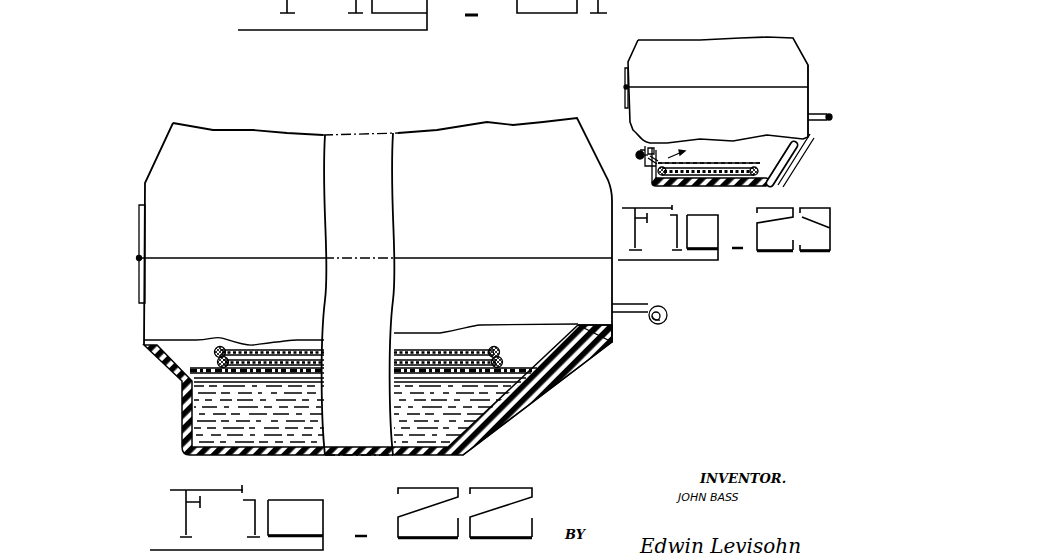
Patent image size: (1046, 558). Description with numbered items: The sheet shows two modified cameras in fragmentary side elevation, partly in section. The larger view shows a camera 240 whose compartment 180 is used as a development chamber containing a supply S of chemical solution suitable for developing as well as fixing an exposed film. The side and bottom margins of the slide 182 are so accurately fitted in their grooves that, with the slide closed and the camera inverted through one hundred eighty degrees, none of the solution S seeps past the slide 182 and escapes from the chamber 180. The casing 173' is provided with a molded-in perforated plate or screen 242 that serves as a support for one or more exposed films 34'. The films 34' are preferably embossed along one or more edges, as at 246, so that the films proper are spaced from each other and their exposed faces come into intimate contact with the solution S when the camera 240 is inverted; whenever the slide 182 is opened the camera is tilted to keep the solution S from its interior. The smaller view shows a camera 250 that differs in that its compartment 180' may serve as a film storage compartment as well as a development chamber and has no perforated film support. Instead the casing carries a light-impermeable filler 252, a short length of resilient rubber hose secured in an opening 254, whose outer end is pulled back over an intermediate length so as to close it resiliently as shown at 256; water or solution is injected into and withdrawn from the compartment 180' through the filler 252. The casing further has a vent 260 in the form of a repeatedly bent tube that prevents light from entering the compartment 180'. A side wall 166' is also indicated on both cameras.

In FIG. 22, the camera 240 is at (151, 144).
In FIG. 22, the exposed films 34' is at (358, 341).
In FIG. 22, the embossed edge 246 is at (220, 358).
In FIG. 22, the perforated plate or screen 242 is at (542, 374).
In FIG. 22, the chemical solution S is at (492, 418).
In FIG. 22, the casing 173' is at (378, 393).
In FIG. 22, the side wall 166' is at (550, 398).
In FIG. 23, the side wall 166' is at (821, 101).
In FIG. 22, the compartment 180 is at (609, 342).
In FIG. 22, the slide 182 is at (660, 306).
In FIG. 23, the slide 182 is at (829, 128).
In FIG. 23, the camera 250 is at (812, 29).
In FIG. 23, the light-impermeable filler 252 is at (643, 147).
In FIG. 23, the closed end of filler 256 is at (636, 156).
In FIG. 23, the opening 254 is at (650, 161).
In FIG. 23, the compartment 180' is at (692, 172).
In FIG. 23, the vent 260 is at (798, 158).